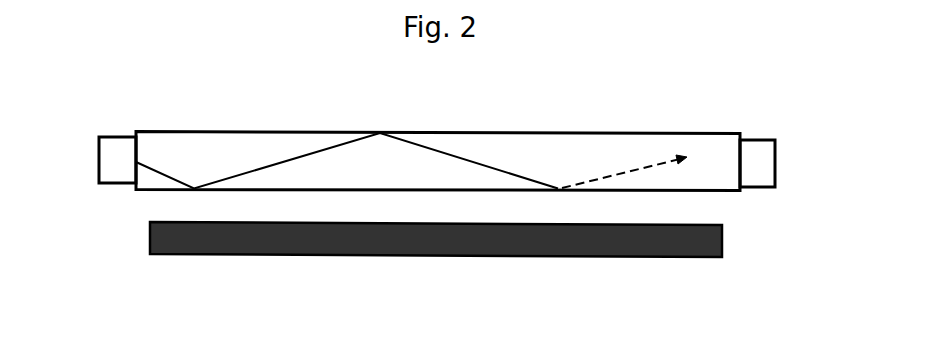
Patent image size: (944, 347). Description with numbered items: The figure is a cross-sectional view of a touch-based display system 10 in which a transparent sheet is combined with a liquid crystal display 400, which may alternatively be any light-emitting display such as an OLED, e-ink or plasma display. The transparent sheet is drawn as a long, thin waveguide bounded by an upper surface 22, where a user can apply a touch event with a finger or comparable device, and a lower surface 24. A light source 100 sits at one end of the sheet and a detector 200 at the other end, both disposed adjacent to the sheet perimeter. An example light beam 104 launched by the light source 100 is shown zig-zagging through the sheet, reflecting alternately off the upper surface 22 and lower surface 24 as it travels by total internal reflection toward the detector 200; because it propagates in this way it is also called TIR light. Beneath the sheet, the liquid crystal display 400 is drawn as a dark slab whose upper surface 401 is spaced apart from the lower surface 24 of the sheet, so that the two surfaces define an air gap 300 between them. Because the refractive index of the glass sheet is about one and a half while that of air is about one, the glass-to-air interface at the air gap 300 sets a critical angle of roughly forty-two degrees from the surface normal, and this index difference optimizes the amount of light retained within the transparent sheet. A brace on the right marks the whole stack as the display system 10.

The display system 10 is at (815, 112).
The upper surface 22 is at (440, 128).
The lower surface 24 is at (658, 187).
The light source 100 is at (118, 134).
The light beam 104 is at (288, 158).
The detector 200 is at (760, 134).
The air gap 300 is at (717, 208).
The liquid crystal display 400 is at (148, 235).
The upper surface of the LCD 401 is at (229, 219).